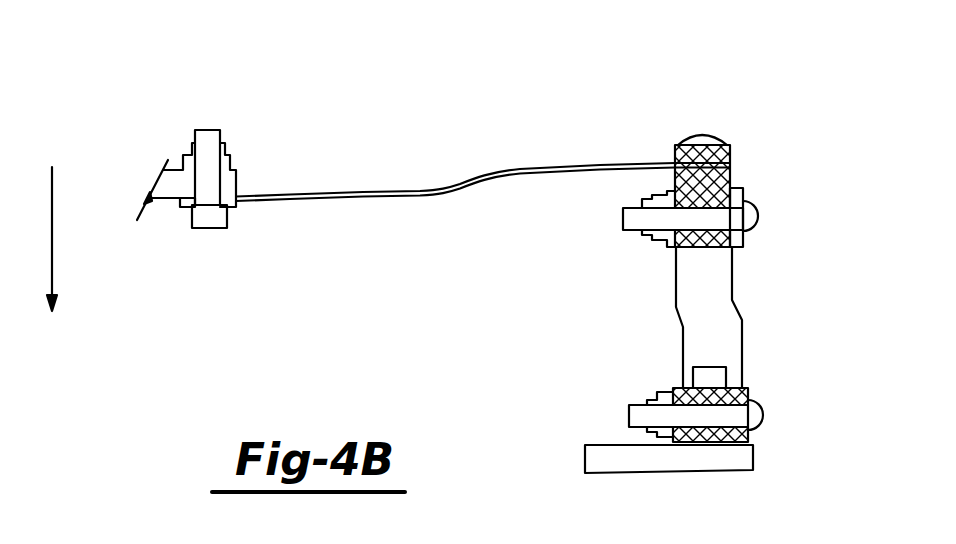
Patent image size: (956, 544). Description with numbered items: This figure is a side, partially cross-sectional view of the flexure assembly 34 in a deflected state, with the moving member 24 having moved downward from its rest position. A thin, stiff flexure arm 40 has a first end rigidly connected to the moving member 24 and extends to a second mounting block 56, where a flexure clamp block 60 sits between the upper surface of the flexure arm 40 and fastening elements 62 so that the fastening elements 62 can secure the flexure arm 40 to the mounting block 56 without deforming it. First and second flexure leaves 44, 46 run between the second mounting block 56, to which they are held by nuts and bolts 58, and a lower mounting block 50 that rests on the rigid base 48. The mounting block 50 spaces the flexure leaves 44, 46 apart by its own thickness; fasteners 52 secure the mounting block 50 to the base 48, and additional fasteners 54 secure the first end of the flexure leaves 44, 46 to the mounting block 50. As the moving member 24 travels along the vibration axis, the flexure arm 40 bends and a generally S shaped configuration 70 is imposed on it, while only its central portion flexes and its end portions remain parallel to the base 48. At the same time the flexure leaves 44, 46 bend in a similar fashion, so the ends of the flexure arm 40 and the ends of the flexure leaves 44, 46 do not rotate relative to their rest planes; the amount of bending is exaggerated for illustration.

The moving member 24 is at (178, 188).
The flexure assembly 34 is at (712, 105).
The flexure arm 40 is at (366, 197).
The first flexure leaf 44 is at (742, 320).
The second flexure leaf 46 is at (687, 293).
The base 48 is at (597, 455).
The mounting block 50 is at (675, 388).
The fasteners 52 is at (715, 378).
The fasteners 54 is at (760, 410).
The second mounting block 56 is at (745, 205).
The nuts and bolts 58 is at (747, 228).
The flexure clamp block 60 is at (737, 157).
The fastening elements 62 is at (720, 137).
The S shaped configuration 70 is at (453, 152).